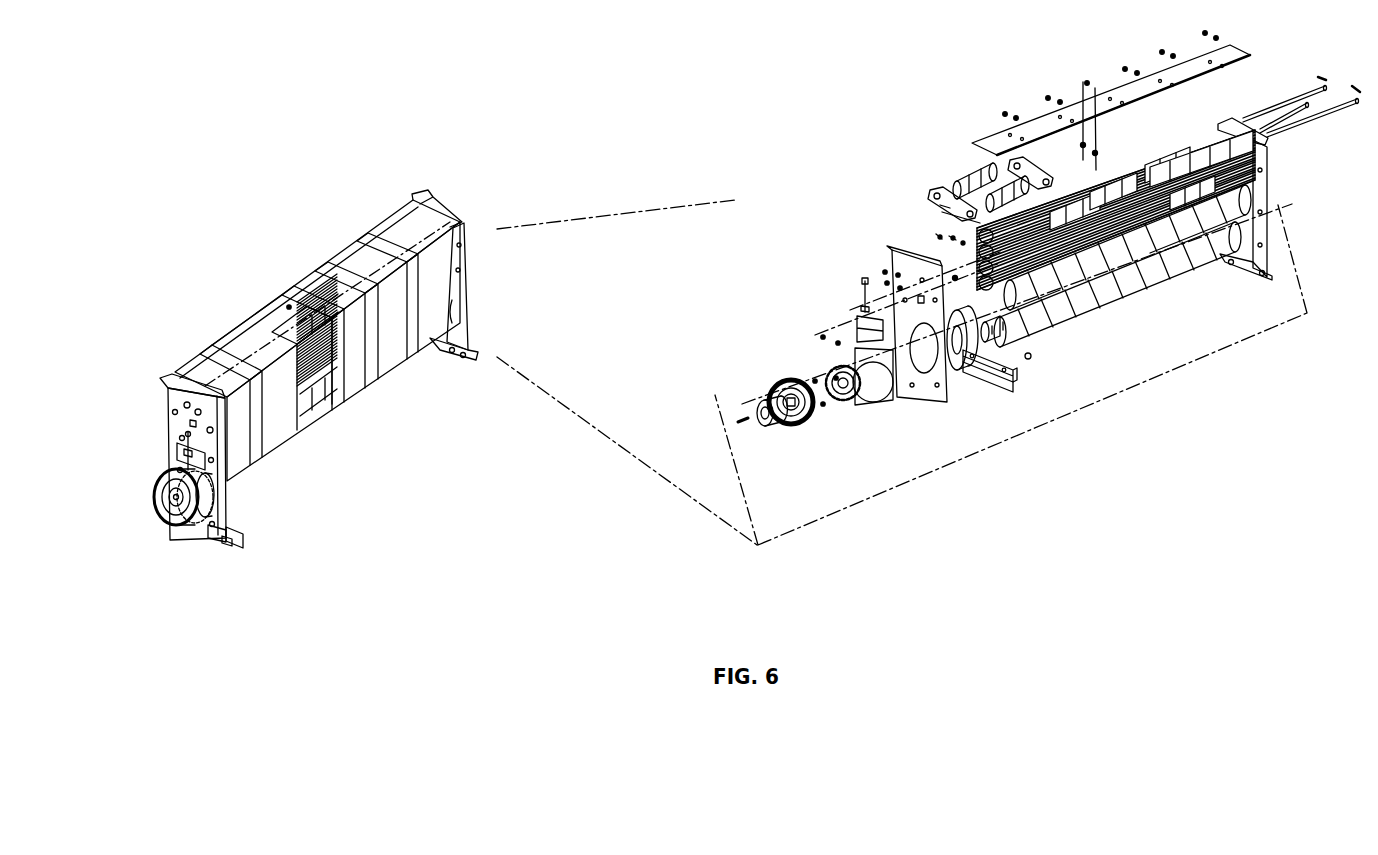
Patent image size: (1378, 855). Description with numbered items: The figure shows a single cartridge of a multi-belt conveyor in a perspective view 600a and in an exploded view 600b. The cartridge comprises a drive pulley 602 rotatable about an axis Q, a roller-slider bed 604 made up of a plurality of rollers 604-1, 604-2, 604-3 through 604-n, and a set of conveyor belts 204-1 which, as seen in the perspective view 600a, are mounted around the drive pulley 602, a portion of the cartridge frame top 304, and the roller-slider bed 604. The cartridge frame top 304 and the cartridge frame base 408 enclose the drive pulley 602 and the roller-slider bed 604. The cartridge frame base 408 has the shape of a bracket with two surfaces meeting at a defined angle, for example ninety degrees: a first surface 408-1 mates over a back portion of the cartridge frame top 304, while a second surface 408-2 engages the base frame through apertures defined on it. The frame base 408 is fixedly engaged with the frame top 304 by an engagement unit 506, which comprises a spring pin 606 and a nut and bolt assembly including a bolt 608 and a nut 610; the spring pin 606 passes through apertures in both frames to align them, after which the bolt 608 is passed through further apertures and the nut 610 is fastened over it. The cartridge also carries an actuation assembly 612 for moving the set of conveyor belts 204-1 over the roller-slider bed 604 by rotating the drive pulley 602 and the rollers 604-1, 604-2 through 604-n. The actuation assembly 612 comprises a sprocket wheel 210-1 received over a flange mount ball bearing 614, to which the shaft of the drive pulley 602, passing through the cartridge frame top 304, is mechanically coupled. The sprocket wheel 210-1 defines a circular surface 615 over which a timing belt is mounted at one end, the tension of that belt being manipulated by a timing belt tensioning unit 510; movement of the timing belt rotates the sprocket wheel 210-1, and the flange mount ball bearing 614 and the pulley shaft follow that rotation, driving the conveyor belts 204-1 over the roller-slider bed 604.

The perspective view 600a is at (262, 194).
The exploded view 600b is at (830, 196).
The cartridge frame top 304 is at (288, 300).
The roller-slider bed 604 is at (303, 300).
The set of conveyor belts 204-1 is at (236, 331).
The timing belt tensioning unit 510 is at (190, 423).
The flange mount ball bearing 614 is at (165, 485).
The sprocket wheel 210-1 is at (160, 503).
The bolt 608 is at (203, 527).
The spring pin 606 is at (225, 525).
The engagement unit 506 is at (240, 532).
The cartridge frame base 408 is at (233, 547).
The drive pulley 602 is at (300, 434).
The roller 604-1 is at (960, 180).
The roller 604-2 is at (1005, 187).
The roller 604-3 is at (1080, 263).
The roller 604-n is at (1205, 140).
The circular surface 615 is at (780, 363).
The first surface 408-1 is at (1012, 352).
The second surface 408-2 is at (1010, 385).
The nut 610 is at (1031, 359).
The actuation assembly 612 is at (758, 548).
The axis Q is at (1028, 303).